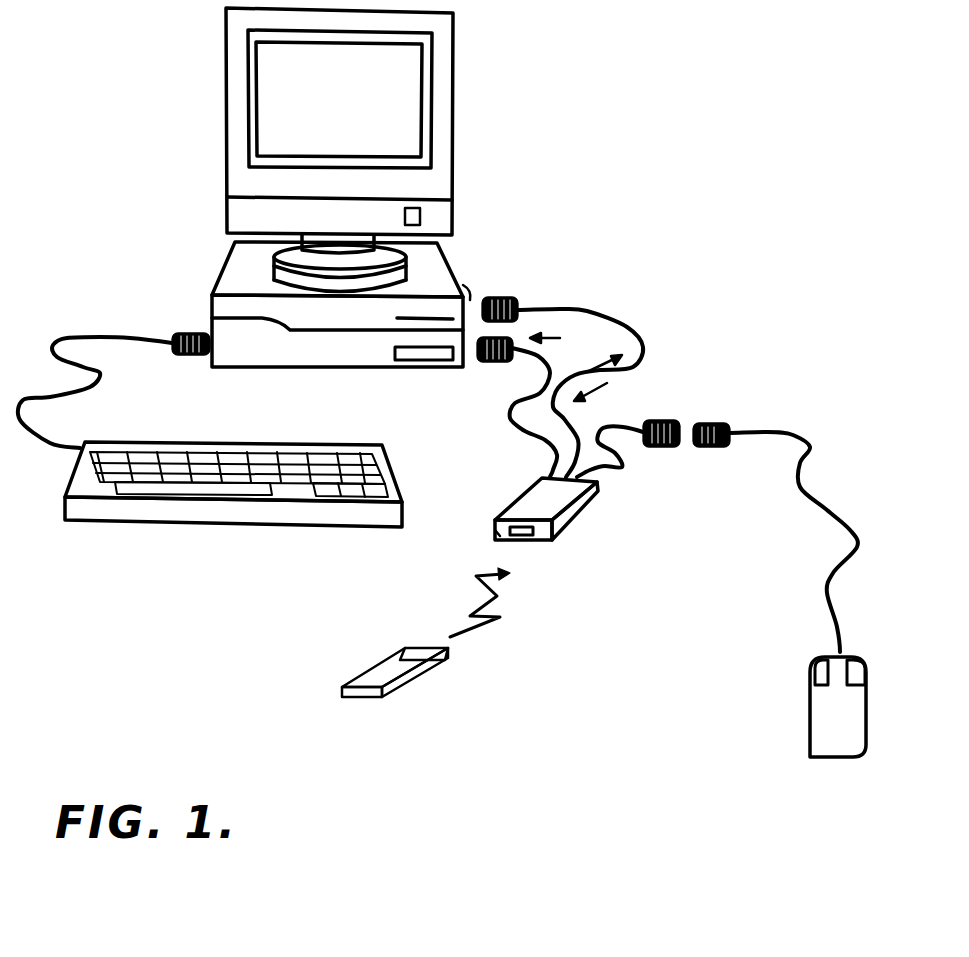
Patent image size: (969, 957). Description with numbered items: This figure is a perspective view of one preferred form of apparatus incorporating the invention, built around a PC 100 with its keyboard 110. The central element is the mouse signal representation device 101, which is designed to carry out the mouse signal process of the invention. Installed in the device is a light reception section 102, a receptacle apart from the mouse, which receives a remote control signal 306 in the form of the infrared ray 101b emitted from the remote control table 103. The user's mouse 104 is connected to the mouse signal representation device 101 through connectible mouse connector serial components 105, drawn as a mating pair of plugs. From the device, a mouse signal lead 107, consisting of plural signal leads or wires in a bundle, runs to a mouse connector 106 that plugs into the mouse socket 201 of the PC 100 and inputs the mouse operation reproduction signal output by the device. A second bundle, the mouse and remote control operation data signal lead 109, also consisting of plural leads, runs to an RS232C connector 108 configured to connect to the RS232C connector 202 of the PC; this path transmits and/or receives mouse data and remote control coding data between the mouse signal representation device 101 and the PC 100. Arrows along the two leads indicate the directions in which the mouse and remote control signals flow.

The PC 100 is at (455, 285).
The mouse socket 201 is at (460, 376).
The RS232C connector 202 is at (484, 300).
The RS232C connector 108 is at (520, 297).
The mouse and remote control operation data signal lead 109 is at (638, 355).
The mouse connector 106 is at (497, 365).
The mouse signal lead 107 is at (543, 358).
The mouse connector serial components 105 is at (665, 447).
The mouse 104 is at (830, 733).
The mouse signal representation device 101 is at (568, 523).
The light reception section 102 is at (500, 537).
The infrared ray 101b is at (600, 612).
The remote control signal 306 is at (463, 602).
The remote control table 103 is at (397, 683).
The keyboard 110 is at (223, 517).